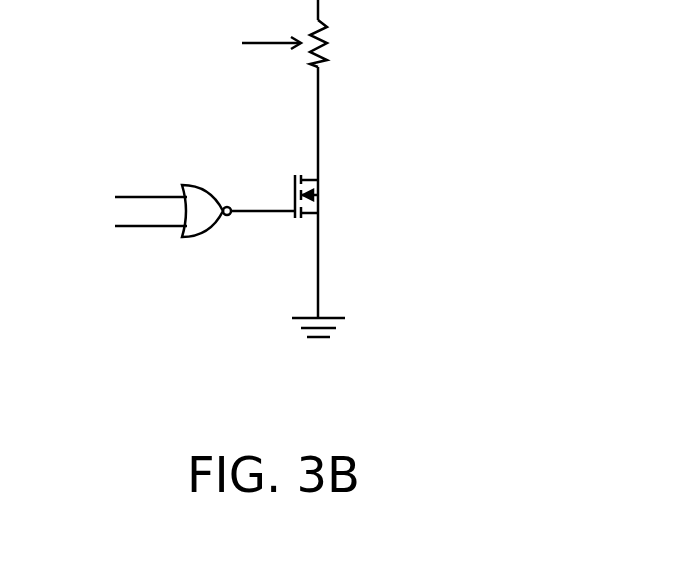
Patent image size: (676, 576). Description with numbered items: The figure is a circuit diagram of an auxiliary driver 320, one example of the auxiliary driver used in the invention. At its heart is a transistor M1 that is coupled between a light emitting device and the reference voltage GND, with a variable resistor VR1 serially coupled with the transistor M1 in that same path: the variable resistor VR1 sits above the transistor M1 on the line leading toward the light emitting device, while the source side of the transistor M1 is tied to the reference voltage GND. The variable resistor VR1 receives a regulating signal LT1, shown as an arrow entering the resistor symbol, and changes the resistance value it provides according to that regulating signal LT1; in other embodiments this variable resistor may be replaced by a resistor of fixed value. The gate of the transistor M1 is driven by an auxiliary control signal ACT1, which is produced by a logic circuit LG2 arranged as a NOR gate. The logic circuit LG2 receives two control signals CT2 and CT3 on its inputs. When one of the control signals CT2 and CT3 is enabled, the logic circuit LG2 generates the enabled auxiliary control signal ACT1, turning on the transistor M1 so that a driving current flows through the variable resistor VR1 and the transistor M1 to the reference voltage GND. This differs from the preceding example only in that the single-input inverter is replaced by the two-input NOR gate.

The auxiliary driver 320 is at (548, 375).
The variable resistor VR1 is at (343, 43).
The regulating signal LT1 is at (248, 44).
The logic circuit LG2 is at (203, 184).
The control signal CT2 is at (131, 194).
The control signal CT3 is at (131, 227).
The auxiliary control signal ACT1 is at (263, 214).
The transistor M1 is at (326, 196).
The reference voltage GND is at (318, 349).